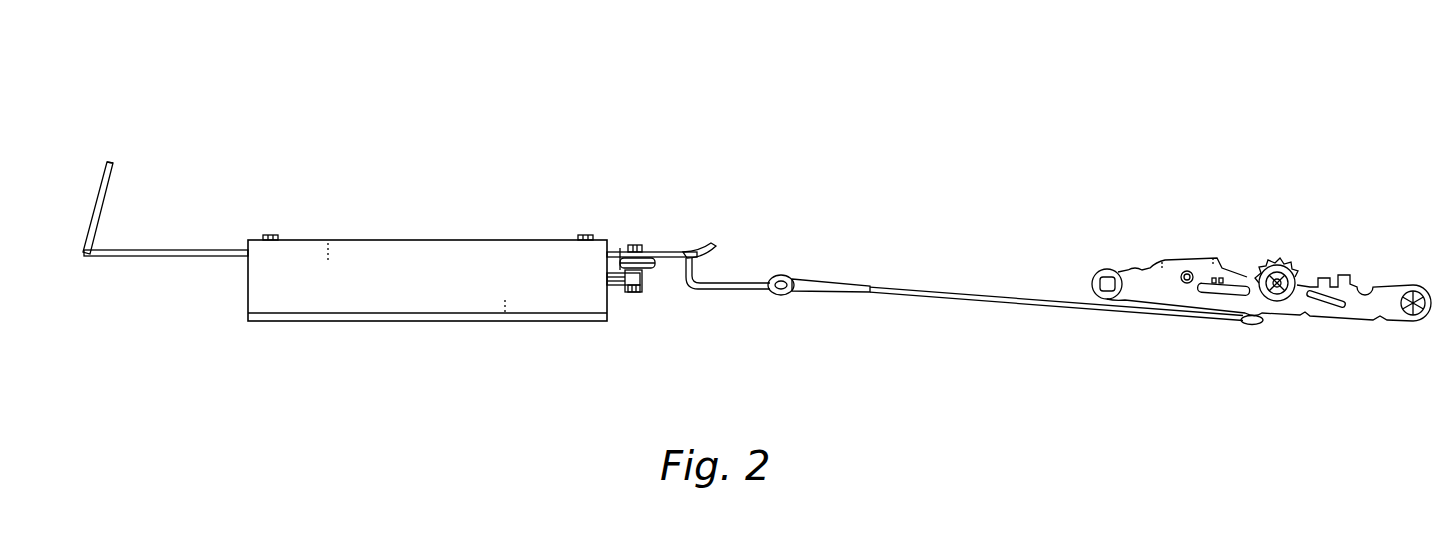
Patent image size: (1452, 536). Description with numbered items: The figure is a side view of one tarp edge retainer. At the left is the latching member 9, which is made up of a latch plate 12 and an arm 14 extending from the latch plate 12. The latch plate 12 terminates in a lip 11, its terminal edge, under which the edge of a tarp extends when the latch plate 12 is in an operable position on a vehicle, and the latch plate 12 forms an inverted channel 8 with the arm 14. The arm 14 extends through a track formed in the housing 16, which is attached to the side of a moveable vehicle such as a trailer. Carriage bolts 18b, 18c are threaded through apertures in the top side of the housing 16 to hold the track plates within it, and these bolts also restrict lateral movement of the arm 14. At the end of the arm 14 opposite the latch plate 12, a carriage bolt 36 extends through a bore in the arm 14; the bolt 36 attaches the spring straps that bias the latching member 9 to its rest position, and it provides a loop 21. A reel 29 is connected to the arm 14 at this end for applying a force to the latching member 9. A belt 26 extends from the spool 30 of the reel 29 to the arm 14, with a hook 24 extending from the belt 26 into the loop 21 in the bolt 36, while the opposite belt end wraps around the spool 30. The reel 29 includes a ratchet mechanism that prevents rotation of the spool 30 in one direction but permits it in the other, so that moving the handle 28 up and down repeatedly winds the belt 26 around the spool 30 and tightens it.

The inverted channel 8 is at (100, 243).
The latching member 9 is at (132, 296).
The lip 11 is at (110, 162).
The latch plate 12 is at (108, 190).
The arm 14 is at (205, 257).
The housing 16 is at (300, 318).
The carriage bolt 18b is at (273, 237).
The carriage bolt 18c is at (580, 237).
The loop 21 is at (650, 270).
The hook 24 is at (733, 291).
The belt 26 is at (975, 301).
The handle 28 is at (1127, 280).
The reel 29 is at (1312, 347).
The spool 30 is at (1287, 253).
The carriage bolt 36 is at (636, 293).